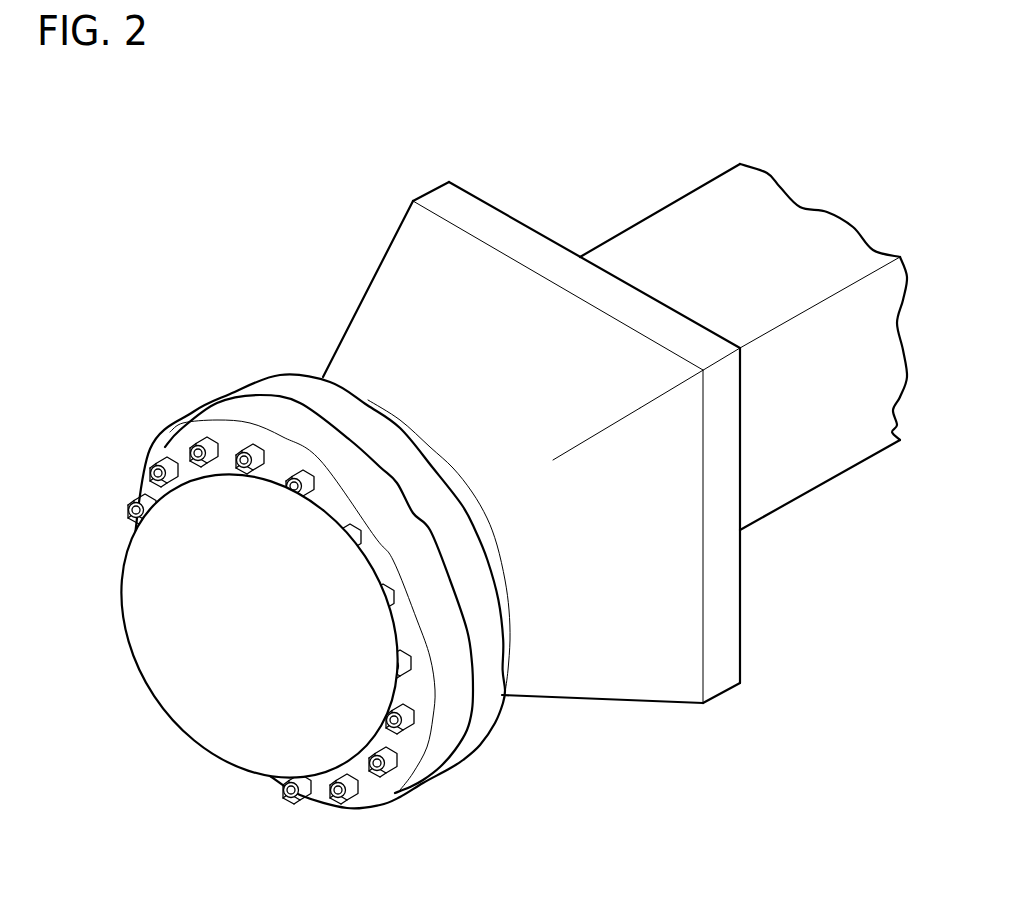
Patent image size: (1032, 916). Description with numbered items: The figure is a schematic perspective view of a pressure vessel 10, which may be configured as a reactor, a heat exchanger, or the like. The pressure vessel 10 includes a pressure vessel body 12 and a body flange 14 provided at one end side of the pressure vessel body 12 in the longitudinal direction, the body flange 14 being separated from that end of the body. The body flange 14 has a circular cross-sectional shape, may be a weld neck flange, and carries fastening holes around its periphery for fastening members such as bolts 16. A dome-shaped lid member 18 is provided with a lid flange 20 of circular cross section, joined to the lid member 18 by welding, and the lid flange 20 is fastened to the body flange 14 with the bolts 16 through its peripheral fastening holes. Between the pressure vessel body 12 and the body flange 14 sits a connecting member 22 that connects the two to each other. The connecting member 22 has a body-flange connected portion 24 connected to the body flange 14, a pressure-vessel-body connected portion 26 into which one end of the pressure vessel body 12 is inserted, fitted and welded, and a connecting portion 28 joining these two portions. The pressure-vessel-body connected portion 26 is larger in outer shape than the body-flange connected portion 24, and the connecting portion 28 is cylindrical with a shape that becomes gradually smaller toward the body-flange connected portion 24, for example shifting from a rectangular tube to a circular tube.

The pressure vessel 10 is at (342, 204).
The pressure vessel body 12 is at (677, 228).
The body flange 14 is at (297, 390).
The bolts 16 is at (163, 445).
The lid member 18 is at (124, 618).
The lid flange 20 is at (237, 410).
The connecting member 22 is at (750, 572).
The body-flange connected portion 24 is at (495, 534).
The pressure-vessel-body connected portion 26 is at (725, 633).
The connecting portion 28 is at (652, 672).